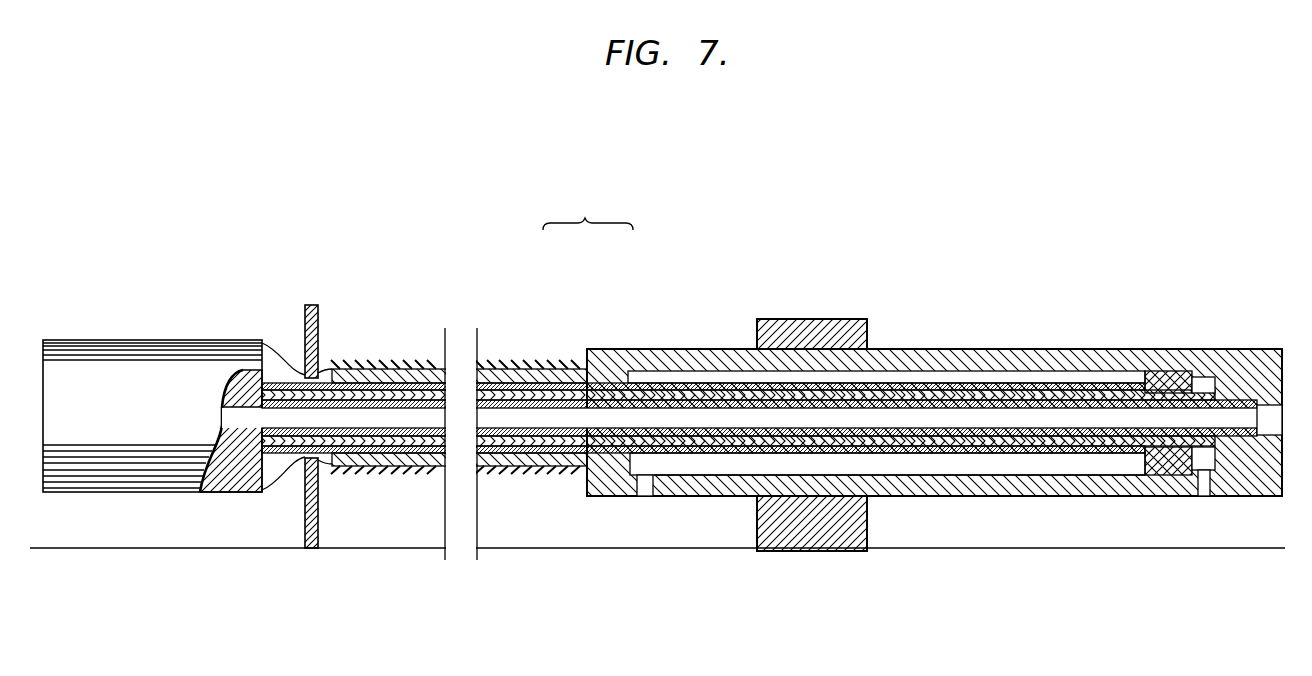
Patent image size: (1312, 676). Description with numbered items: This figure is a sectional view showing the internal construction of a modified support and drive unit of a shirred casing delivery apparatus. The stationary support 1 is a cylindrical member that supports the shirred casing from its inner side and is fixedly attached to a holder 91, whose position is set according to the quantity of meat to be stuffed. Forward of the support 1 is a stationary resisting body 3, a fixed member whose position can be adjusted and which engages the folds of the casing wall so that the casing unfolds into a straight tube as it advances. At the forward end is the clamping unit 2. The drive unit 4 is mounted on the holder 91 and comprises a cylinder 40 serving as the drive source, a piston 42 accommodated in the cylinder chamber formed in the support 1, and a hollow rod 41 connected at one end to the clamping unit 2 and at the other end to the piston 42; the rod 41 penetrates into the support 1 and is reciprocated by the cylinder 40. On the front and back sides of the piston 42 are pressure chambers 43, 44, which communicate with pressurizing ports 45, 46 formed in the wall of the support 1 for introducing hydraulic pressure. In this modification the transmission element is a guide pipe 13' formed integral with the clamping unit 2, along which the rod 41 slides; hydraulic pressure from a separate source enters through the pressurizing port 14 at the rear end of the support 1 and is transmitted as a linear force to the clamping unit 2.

The stationary support 1 is at (400, 372).
The clamping unit 2 is at (207, 365).
The stationary resisting body 3 is at (316, 305).
The drive unit 4 is at (588, 209).
The guide pipe 13' is at (759, 320).
The pressurizing port 14 is at (1277, 418).
The cylinder 40 is at (628, 353).
The rod 41 is at (516, 378).
The piston 42 is at (1162, 378).
The pressure chamber 43 is at (912, 477).
The pressure chamber 44 is at (1203, 380).
The pressurizing port 45 is at (645, 490).
The pressurizing port 46 is at (1204, 487).
The holder 91 is at (795, 326).